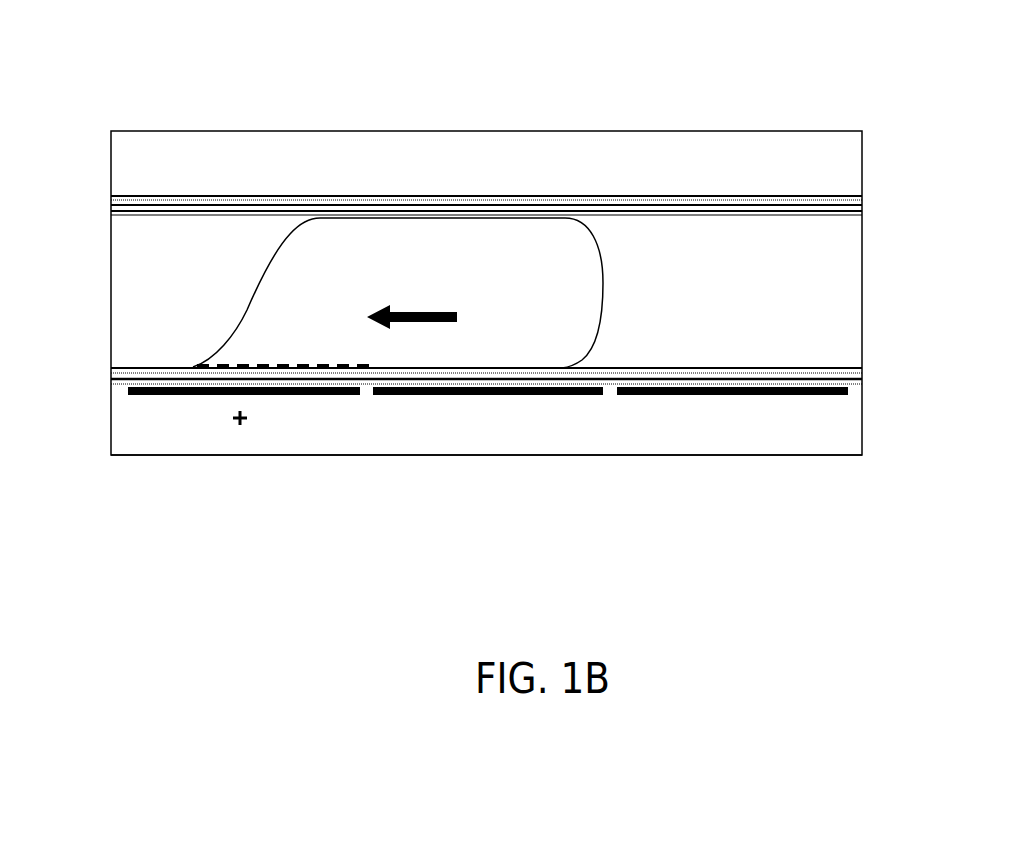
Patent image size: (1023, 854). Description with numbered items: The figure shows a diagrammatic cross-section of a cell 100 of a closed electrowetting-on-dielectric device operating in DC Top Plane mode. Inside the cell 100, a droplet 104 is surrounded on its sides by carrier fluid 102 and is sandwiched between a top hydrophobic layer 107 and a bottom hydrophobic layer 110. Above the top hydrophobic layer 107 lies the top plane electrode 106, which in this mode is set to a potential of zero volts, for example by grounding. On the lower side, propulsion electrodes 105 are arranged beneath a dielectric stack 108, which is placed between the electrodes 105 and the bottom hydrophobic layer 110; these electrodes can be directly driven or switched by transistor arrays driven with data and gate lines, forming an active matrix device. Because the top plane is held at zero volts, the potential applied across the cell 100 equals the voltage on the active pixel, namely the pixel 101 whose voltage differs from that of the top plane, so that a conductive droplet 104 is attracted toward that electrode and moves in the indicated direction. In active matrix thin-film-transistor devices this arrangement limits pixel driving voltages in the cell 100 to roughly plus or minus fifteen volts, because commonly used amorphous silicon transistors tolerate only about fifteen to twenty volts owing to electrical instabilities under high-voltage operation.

The cell 100 is at (114, 114).
The pixel 101 is at (318, 397).
The carrier fluid 102 is at (765, 305).
The droplet 104 is at (550, 345).
The propulsion electrodes 105 is at (823, 395).
The top plane electrode 106 is at (825, 195).
The top hydrophobic layer 107 is at (862, 215).
The dielectric stack 108 is at (866, 387).
The bottom hydrophobic layer 110 is at (867, 375).